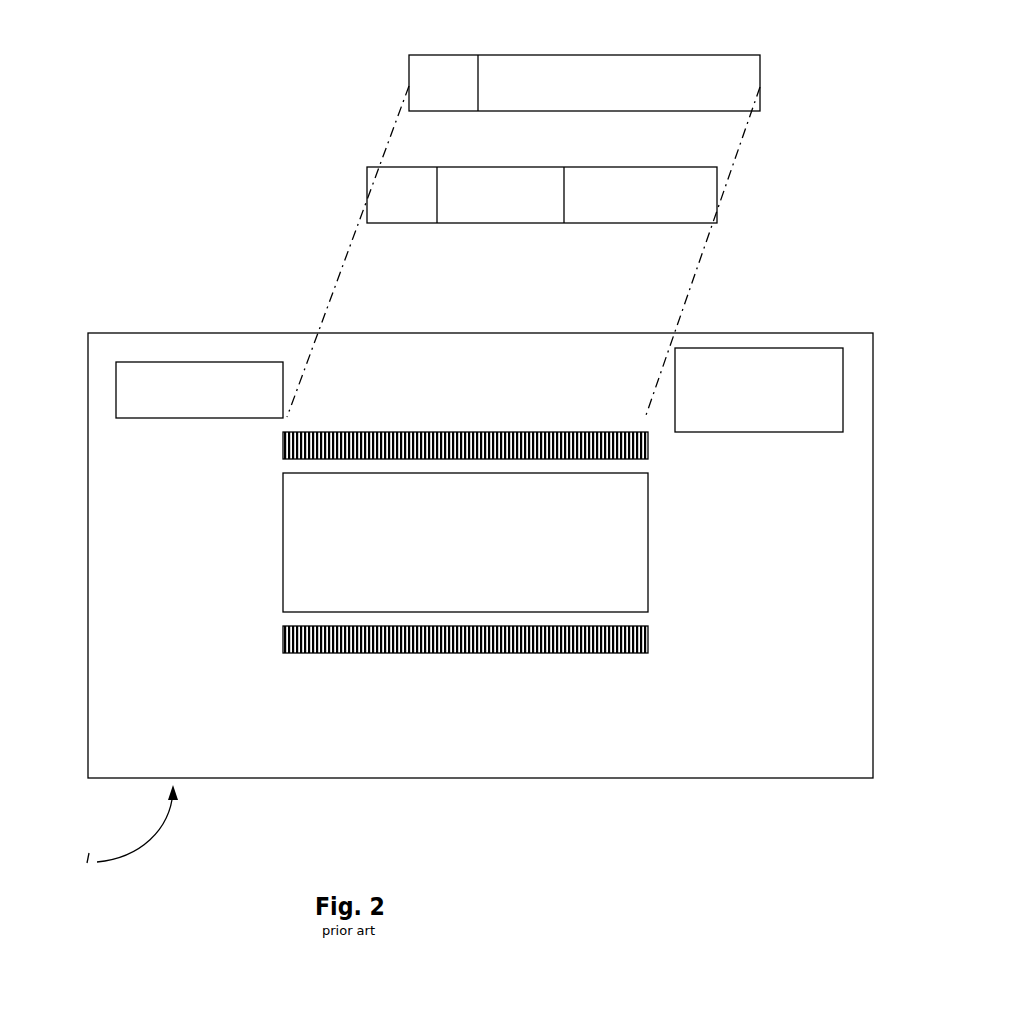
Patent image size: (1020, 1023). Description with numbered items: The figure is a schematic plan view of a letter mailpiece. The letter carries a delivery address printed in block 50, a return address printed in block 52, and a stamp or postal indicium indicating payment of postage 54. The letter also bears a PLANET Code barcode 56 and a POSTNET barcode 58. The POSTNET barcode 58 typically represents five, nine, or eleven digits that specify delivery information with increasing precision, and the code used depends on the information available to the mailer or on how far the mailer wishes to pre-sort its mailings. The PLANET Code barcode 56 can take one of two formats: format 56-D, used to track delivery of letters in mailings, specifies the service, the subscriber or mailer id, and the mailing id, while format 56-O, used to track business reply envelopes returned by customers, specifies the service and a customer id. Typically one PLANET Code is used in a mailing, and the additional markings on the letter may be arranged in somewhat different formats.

The delivery address block 50 is at (283, 507).
The return address block 52 is at (116, 397).
The stamp or postal indicium 54 is at (694, 348).
The PLANET Code barcode 56 is at (424, 432).
The PLANET Code format for BRE tracking 56-O is at (652, 54).
The PLANET Code format for delivery tracking 56-D is at (530, 223).
The POSTNET barcode 58 is at (507, 653).